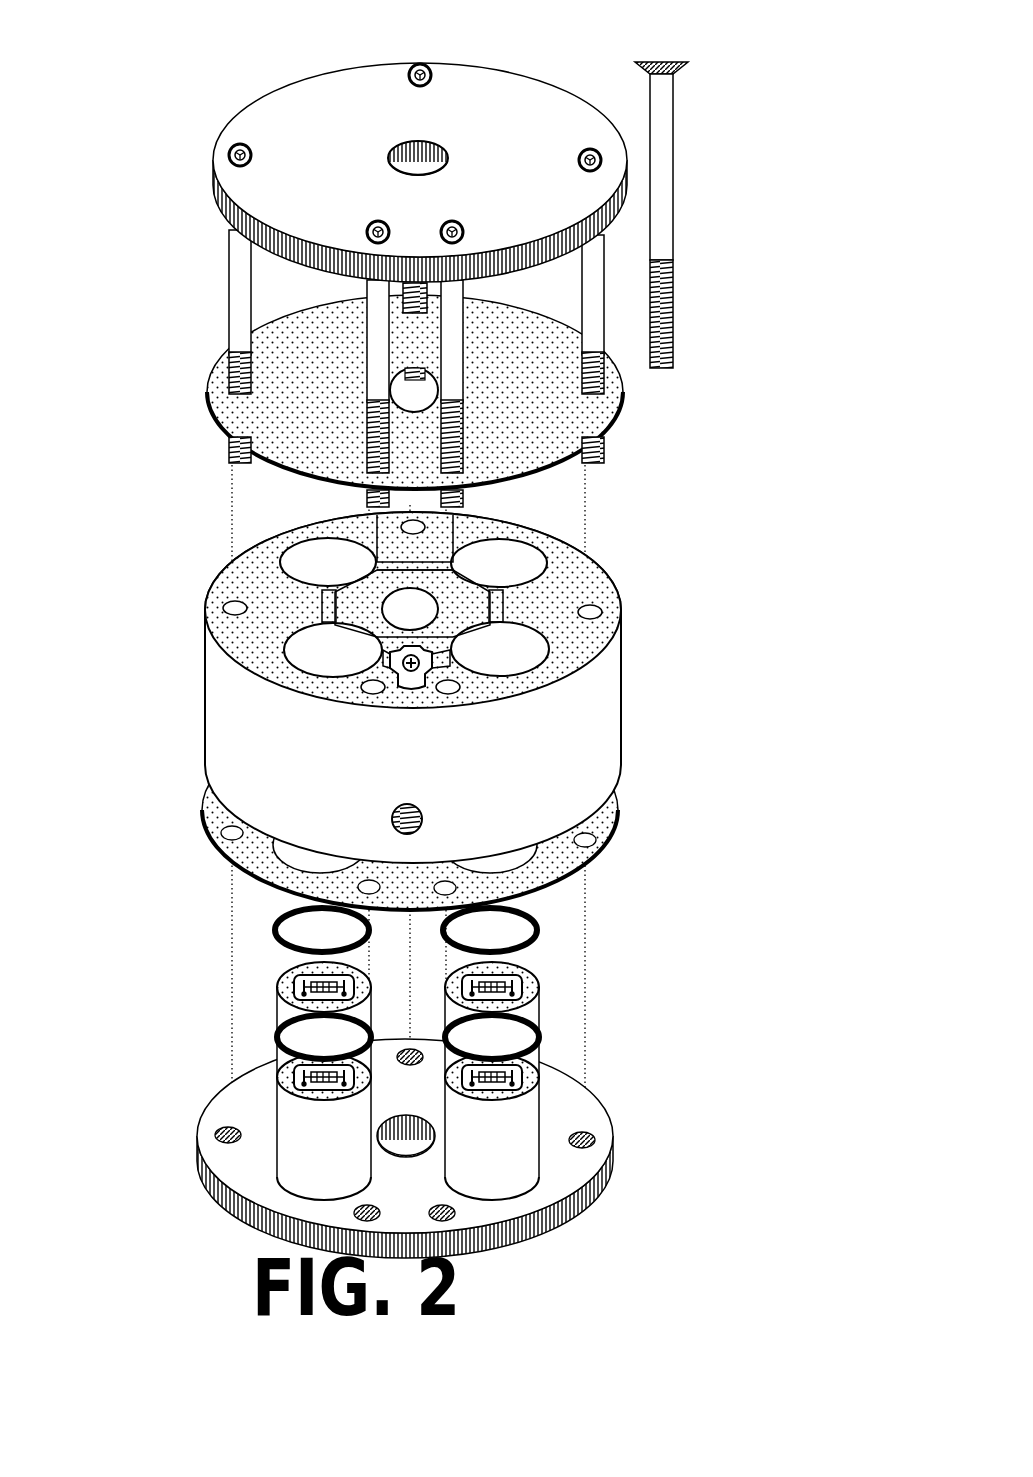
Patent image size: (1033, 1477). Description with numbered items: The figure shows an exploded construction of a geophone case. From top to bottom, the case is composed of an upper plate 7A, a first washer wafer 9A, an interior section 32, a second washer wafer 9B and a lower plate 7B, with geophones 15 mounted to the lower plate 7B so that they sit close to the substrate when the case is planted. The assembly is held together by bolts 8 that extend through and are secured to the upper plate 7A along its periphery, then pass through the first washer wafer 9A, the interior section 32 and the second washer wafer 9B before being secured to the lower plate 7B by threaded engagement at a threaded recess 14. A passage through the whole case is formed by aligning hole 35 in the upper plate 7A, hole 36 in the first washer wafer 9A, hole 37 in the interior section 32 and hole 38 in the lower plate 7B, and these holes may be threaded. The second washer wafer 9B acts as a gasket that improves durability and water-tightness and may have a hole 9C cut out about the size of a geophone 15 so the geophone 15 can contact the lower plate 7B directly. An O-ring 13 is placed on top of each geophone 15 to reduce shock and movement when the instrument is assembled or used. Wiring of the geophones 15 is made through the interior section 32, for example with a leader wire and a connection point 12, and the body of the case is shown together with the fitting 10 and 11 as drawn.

The upper plate 7A is at (530, 68).
The lower plate 7B is at (200, 1108).
The bolt 8 is at (678, 213).
The first washer wafer 9A is at (627, 395).
The second washer wafer 9B is at (205, 837).
The hole 9C is at (297, 857).
The cell body block 10 is at (595, 560).
The inlet fitting 11 is at (400, 667).
The connection point 12 is at (420, 817).
The O-ring 13 is at (533, 917).
The threaded recess 14 is at (590, 1147).
The geophone 15 is at (487, 1172).
The interior section 32 is at (623, 692).
The hole 35 is at (408, 160).
The hole 36 is at (412, 397).
The hole 37 is at (417, 612).
The hole 38 is at (397, 1138).